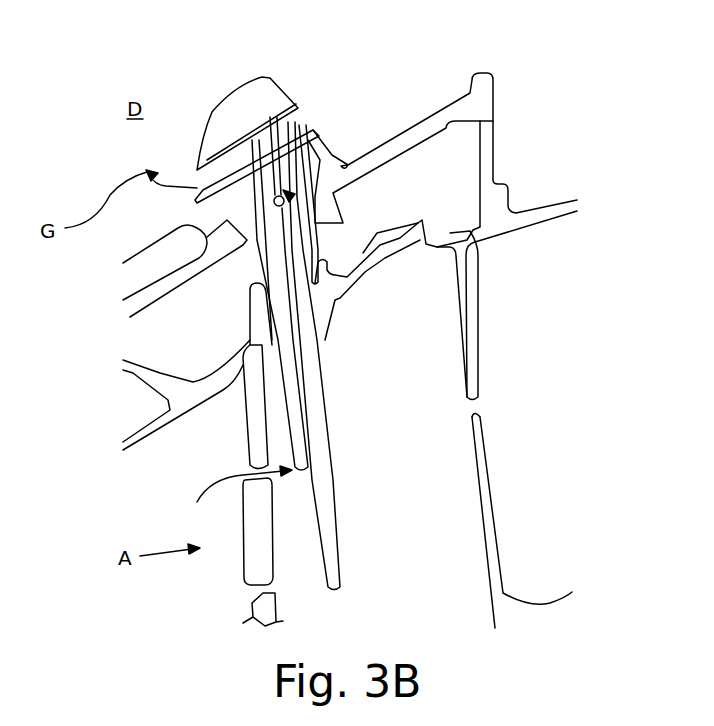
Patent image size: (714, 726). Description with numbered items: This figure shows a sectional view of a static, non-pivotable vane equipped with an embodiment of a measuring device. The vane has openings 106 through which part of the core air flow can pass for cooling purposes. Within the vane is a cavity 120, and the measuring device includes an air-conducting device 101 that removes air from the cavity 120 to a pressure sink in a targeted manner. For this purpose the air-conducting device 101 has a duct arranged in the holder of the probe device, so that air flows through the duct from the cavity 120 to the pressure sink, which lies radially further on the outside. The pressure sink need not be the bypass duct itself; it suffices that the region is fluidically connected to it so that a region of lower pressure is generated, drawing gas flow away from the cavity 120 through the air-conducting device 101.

The air-conducting device 101 is at (257, 258).
The cavity 120 is at (230, 332).
The openings 106 is at (257, 590).